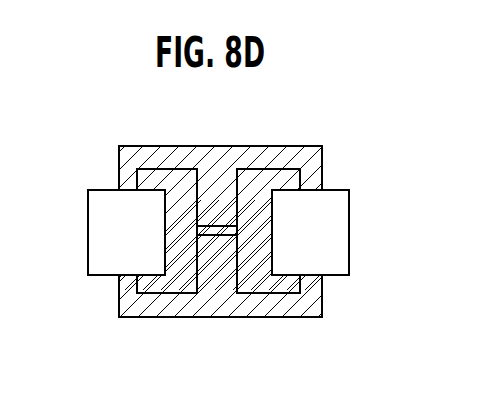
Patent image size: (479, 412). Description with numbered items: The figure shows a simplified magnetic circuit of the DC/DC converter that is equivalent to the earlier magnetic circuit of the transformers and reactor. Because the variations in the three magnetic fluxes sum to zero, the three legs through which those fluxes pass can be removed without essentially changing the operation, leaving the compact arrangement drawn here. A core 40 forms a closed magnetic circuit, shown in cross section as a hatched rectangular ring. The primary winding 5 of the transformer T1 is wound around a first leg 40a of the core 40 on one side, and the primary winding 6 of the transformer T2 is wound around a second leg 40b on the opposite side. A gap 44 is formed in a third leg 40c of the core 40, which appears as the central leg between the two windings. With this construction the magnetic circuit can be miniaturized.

The core 40 is at (220, 146).
The gap 44 is at (234, 231).
The first leg 40a is at (116, 279).
The second leg 40b is at (323, 284).
The third leg 40c is at (240, 275).
The primary winding 5 is at (88, 235).
The primary winding 6 is at (349, 229).